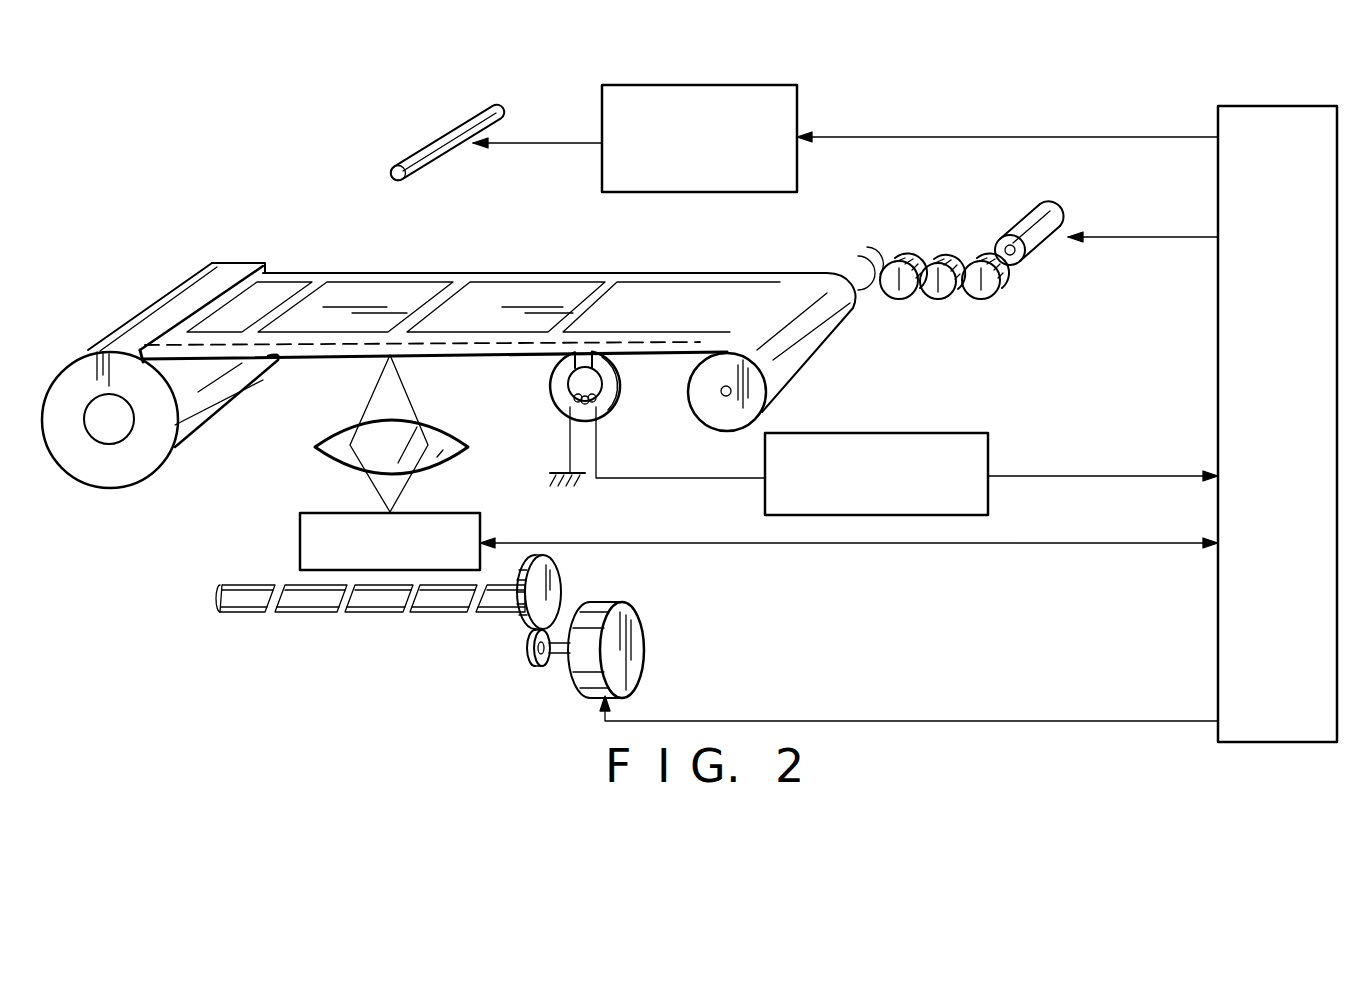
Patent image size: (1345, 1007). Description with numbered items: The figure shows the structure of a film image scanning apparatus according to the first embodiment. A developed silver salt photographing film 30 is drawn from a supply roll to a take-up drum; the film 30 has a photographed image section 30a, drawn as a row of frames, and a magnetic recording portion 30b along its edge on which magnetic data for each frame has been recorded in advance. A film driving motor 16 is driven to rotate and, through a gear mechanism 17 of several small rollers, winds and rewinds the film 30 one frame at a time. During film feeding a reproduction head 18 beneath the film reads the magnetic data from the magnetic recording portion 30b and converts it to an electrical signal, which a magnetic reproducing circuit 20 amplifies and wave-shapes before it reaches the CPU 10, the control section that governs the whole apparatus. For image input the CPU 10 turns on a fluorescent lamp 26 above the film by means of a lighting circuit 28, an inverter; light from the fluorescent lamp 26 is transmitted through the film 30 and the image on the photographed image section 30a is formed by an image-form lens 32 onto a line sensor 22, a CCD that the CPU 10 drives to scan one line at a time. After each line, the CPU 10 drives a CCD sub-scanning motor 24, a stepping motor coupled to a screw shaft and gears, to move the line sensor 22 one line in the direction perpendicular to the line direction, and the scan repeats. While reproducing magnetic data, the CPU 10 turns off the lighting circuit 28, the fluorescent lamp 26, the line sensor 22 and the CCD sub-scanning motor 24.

The CPU 10 is at (1218, 618).
The film driving motor 16 is at (1020, 212).
The gear mechanism 17 is at (918, 298).
The reproduction head 18 is at (613, 407).
The magnetic reproducing circuit 20 is at (955, 432).
The line sensor 22 is at (474, 527).
The CCD sub-scanning motor 24 is at (640, 633).
The fluorescent lamp 26 is at (502, 108).
The lighting circuit 28 is at (765, 83).
The film 30 is at (803, 280).
The photographed image section 30a is at (412, 292).
The magnetic recording portion 30b is at (510, 345).
The image-form lens 32 is at (315, 447).